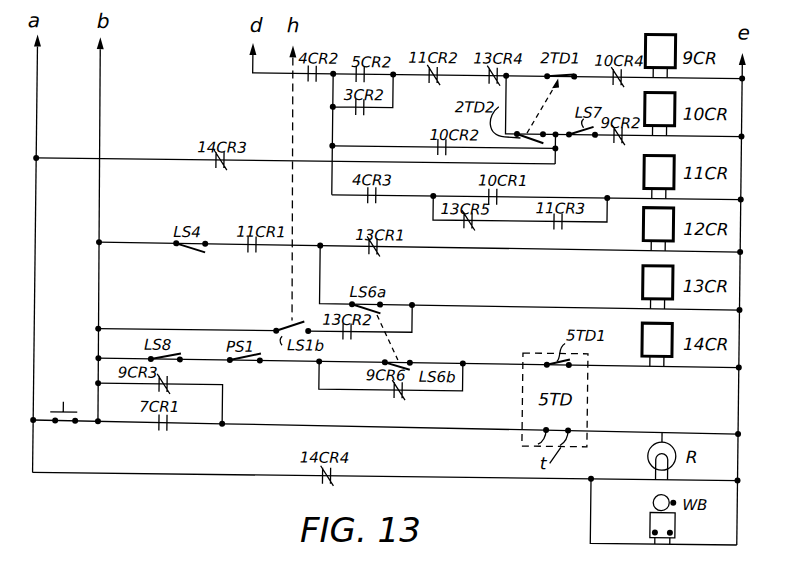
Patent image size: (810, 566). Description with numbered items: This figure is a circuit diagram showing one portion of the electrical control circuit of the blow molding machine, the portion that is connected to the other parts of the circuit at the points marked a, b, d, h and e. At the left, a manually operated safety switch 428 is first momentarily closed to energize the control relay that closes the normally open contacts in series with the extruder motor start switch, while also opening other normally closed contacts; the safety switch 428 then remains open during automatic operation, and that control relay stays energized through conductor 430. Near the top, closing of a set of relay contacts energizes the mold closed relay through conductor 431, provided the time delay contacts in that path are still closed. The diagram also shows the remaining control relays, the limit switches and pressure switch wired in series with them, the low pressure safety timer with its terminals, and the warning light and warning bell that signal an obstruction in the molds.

The safety switch 428 is at (76, 386).
The conductor 430 is at (102, 136).
The conductor 431 is at (262, 72).